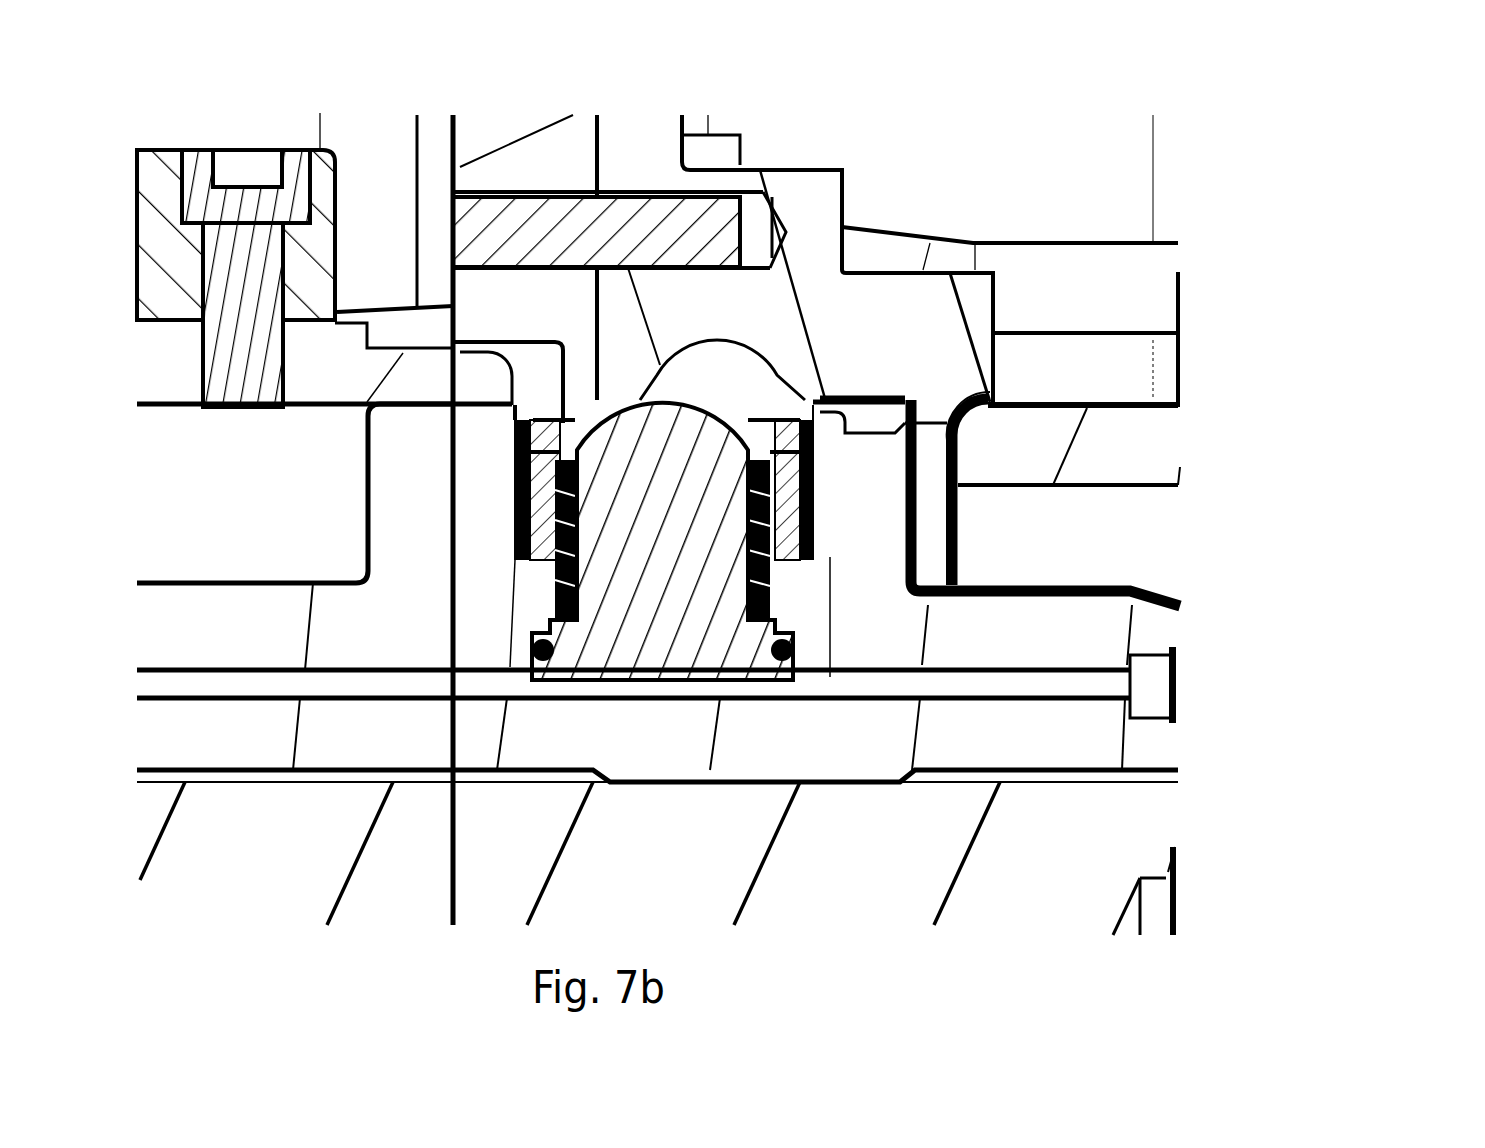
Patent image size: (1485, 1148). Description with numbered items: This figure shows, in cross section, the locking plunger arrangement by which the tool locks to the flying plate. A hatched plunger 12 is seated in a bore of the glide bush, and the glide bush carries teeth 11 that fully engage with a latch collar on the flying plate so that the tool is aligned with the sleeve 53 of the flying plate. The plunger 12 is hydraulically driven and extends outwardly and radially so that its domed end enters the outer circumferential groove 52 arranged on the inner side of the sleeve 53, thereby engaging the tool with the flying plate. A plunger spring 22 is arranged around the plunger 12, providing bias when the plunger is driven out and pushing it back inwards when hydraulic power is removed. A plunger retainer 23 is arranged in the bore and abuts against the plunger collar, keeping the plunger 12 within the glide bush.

The teeth 11 is at (840, 605).
The plunger 12 is at (705, 500).
The plunger spring 22 is at (810, 560).
The plunger retainer 23 is at (820, 462).
The outer circumferential groove 52 is at (770, 356).
The sleeve 53 is at (893, 312).